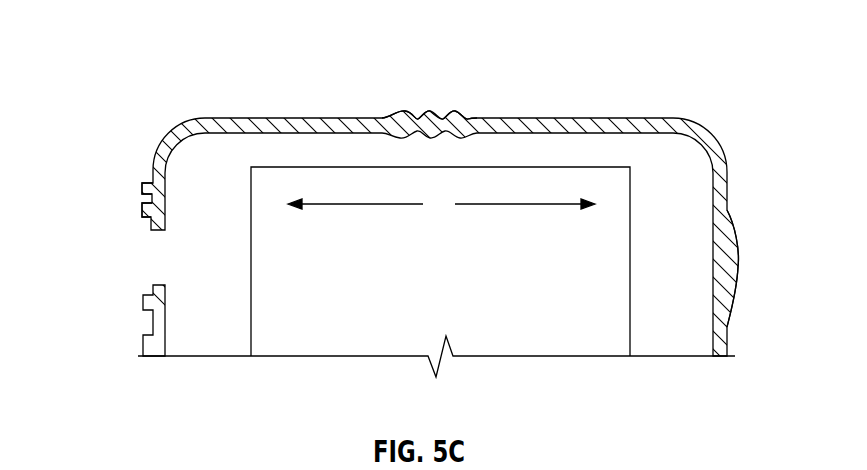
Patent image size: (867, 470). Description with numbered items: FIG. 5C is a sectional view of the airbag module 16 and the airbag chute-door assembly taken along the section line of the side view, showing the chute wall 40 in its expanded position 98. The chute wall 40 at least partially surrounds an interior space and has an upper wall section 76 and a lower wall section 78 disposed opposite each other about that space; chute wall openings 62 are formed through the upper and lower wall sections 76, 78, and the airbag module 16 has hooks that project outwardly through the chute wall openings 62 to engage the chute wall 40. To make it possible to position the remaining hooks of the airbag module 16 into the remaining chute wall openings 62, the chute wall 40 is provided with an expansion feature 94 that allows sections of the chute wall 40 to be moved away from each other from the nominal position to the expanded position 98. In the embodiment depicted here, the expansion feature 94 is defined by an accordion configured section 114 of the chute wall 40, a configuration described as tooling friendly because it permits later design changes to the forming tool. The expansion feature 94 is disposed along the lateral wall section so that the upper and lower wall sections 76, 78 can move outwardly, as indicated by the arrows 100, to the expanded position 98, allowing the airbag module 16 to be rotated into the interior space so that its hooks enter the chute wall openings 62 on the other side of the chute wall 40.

The airbag module 16 is at (327, 338).
The chute wall 40 is at (642, 120).
The chute wall openings 62 is at (153, 247).
The upper wall section 76 is at (736, 242).
The lower wall section 78 is at (143, 205).
The expansion feature 94 is at (438, 118).
The expanded position 98 is at (84, 292).
The arrows 100 is at (360, 205).
The accordion configured section 114 is at (410, 118).